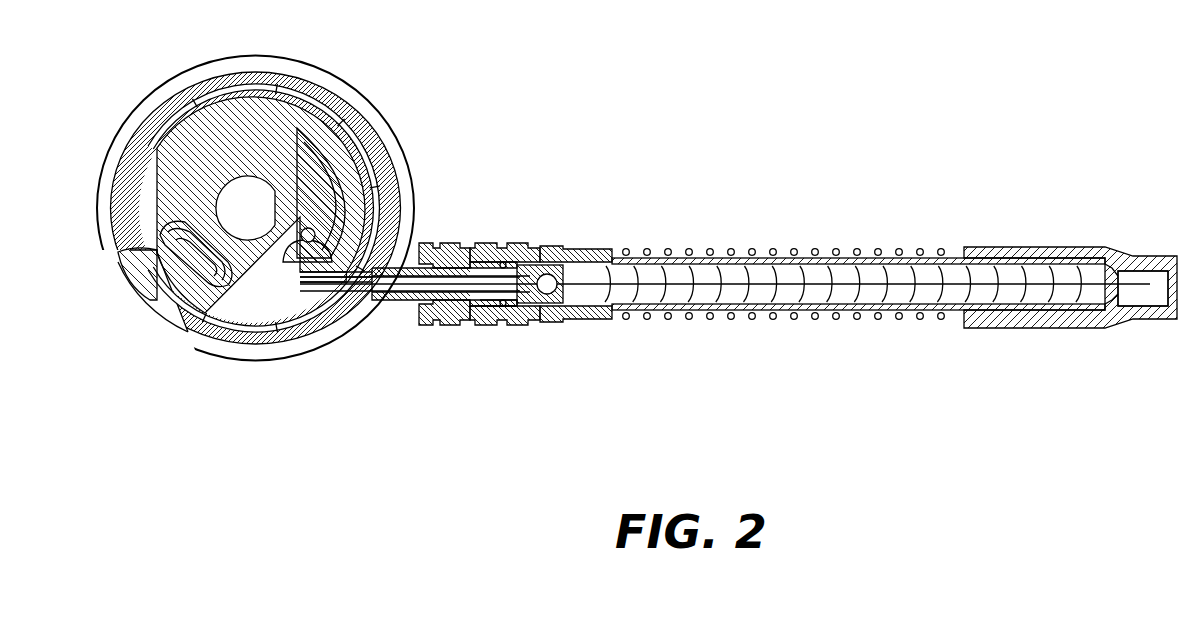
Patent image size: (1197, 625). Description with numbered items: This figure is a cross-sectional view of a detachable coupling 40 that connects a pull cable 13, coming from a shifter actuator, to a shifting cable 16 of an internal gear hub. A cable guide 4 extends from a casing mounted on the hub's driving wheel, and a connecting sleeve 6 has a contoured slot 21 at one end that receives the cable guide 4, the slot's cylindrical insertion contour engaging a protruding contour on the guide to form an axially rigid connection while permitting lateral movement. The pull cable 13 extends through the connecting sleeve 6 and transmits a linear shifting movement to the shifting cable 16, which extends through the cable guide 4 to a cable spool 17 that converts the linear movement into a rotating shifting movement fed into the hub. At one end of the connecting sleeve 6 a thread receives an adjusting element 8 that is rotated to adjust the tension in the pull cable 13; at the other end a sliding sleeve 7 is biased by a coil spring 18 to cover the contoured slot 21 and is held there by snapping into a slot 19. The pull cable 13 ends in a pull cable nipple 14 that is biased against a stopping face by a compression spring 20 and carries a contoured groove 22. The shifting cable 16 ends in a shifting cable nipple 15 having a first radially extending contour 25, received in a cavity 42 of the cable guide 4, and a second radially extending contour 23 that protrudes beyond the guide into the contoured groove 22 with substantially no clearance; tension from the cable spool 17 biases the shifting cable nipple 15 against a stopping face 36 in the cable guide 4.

The cable guide 4 is at (423, 250).
The connecting sleeve 6 is at (912, 312).
The sliding sleeve 7 is at (486, 246).
The adjusting element 8 is at (990, 246).
The pull cable 13 is at (1149, 304).
The pull cable nipple 14 is at (574, 297).
The shifting cable nipple 15 is at (501, 306).
The shifting cable 16 is at (402, 292).
The cable spool 17 is at (314, 176).
The coil spring 18 is at (732, 249).
The slot 19 is at (626, 261).
The compression spring 20 is at (758, 294).
The contoured slot 21 is at (506, 263).
The contoured groove 22 is at (514, 318).
The second radially extending contour 23 is at (522, 262).
The first radially extending contour 25 is at (448, 300).
The stopping face 36 is at (479, 302).
The detachable coupling 40 is at (360, 340).
The cavity 42 is at (424, 294).